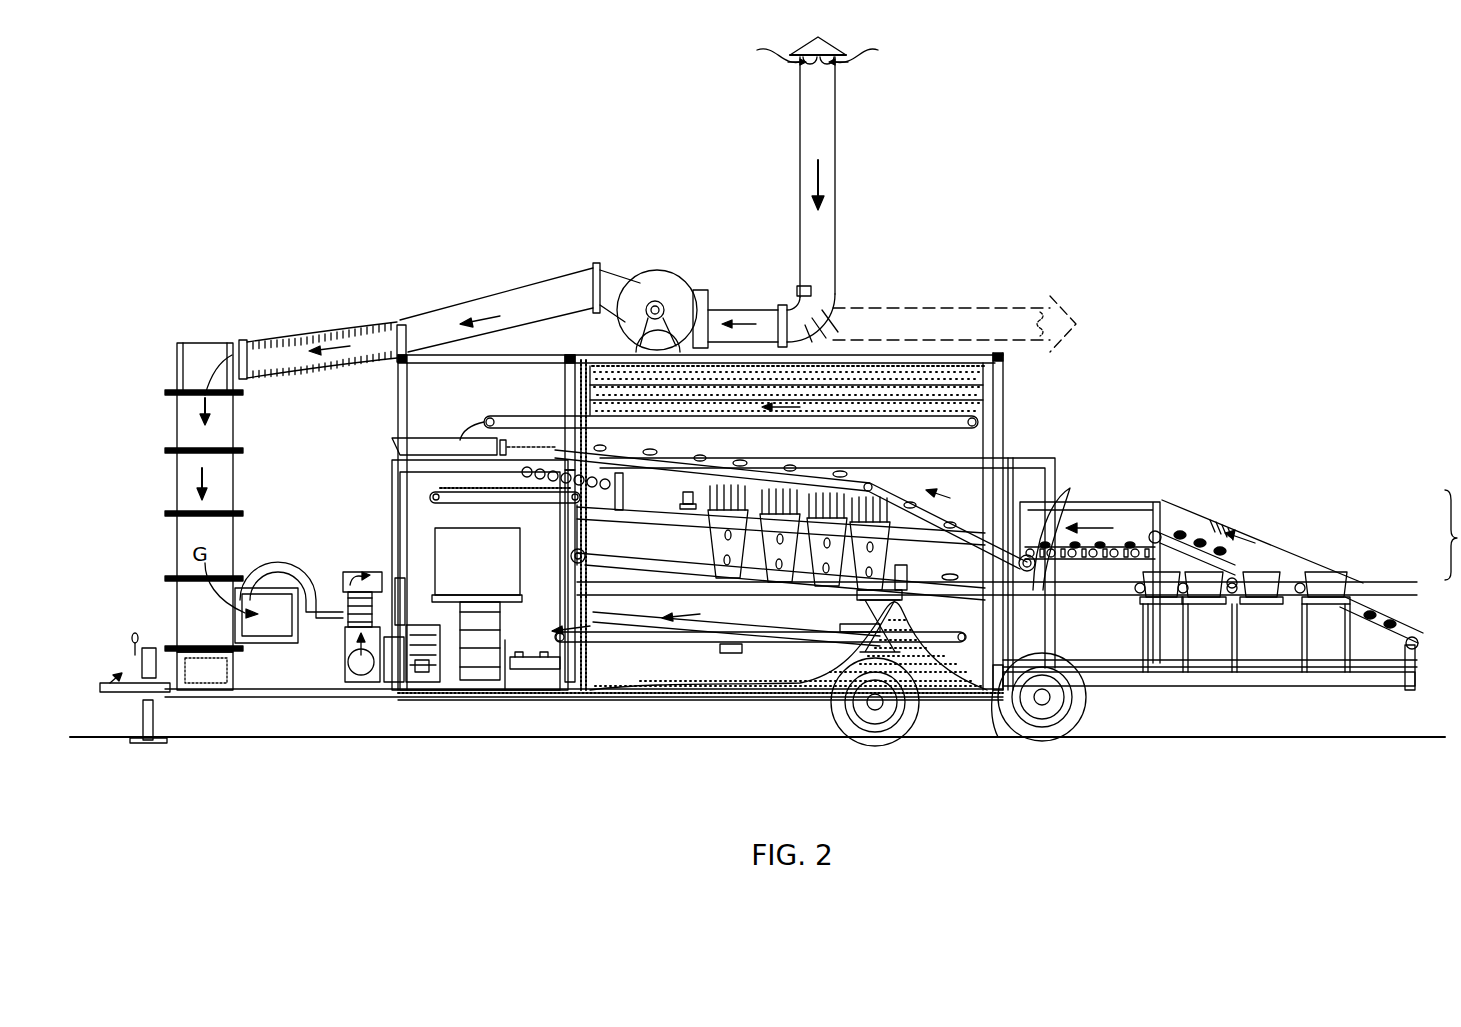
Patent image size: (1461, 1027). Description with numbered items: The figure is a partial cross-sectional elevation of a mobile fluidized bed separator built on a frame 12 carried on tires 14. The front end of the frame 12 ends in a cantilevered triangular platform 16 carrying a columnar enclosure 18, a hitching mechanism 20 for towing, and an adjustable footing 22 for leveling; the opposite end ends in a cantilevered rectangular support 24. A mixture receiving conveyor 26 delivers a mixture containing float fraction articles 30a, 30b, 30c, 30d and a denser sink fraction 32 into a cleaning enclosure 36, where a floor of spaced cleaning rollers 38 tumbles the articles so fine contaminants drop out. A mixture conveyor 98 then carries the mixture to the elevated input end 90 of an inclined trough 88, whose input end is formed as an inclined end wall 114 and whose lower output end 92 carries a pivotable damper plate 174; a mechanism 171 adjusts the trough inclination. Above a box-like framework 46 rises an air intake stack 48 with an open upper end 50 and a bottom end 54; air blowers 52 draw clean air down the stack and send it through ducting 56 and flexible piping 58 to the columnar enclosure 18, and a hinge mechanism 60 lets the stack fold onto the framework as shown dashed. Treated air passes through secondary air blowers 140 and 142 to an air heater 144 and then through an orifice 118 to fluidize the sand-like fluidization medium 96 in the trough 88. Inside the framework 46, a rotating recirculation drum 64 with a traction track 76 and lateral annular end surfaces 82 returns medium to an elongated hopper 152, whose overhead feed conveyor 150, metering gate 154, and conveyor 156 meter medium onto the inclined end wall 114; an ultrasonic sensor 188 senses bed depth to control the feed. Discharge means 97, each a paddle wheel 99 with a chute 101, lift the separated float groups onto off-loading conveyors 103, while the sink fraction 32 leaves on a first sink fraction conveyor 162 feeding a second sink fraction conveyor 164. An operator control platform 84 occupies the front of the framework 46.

The frame 12 is at (506, 690).
The tires 14 is at (912, 722).
The cantilevered triangular platform 16 is at (262, 694).
The columnar enclosure 18 is at (187, 436).
The hitching mechanism 20 is at (108, 710).
The adjustable footing 22 is at (150, 640).
The cantilevered rectangular support 24 is at (1215, 690).
The mixture receiving conveyor 26 is at (1235, 530).
The float fraction article 30a is at (1330, 640).
The float fraction article 30b is at (1345, 640).
The float fraction article 30c is at (1362, 645).
The float fraction article 30d is at (1378, 650).
The sink fraction 32 is at (670, 645).
The cleaning enclosure 36 is at (1135, 505).
The cleaning rollers 38 is at (1065, 495).
The box-like framework 46 is at (390, 403).
The air intake stack 48 is at (843, 173).
The open upper end 50 is at (822, 92).
The air blowers 52 is at (665, 288).
The bottom end 54 is at (825, 268).
The ducting 56 is at (540, 300).
The flexible piping 58 is at (307, 340).
The hinge mechanism 60 is at (812, 318).
The recirculation drum 64 is at (570, 402).
The traction track 76 is at (950, 360).
The lateral annular end surfaces 82 is at (572, 402).
The operator control platform 84 is at (470, 682).
The inclined trough 88 is at (636, 550).
The input end 90 is at (545, 538).
The output end 92 is at (905, 552).
The fluidization medium 96 is at (478, 432).
The discharge means 97 is at (712, 490).
The mixture conveyor 98 is at (1003, 506).
The paddle wheel 99 is at (730, 468).
The chute 101 is at (745, 565).
The off-loading conveyors 103 is at (933, 580).
The inclined end wall 114 is at (562, 521).
The orifice 118 is at (350, 580).
The secondary air blower 140 is at (282, 575).
The secondary air blower 142 is at (405, 608).
The air heater 144 is at (398, 682).
The overhead feed conveyor 150 is at (985, 432).
The elongated hopper 152 is at (378, 453).
The metering gate 154 is at (505, 440).
The conveyor 156 is at (420, 497).
The first sink fraction conveyor 162 is at (730, 653).
The second sink fraction conveyor 164 is at (528, 672).
The mechanism 171 is at (845, 632).
The damper plate 174 is at (905, 565).
The ultrasonic sensor 188 is at (672, 488).